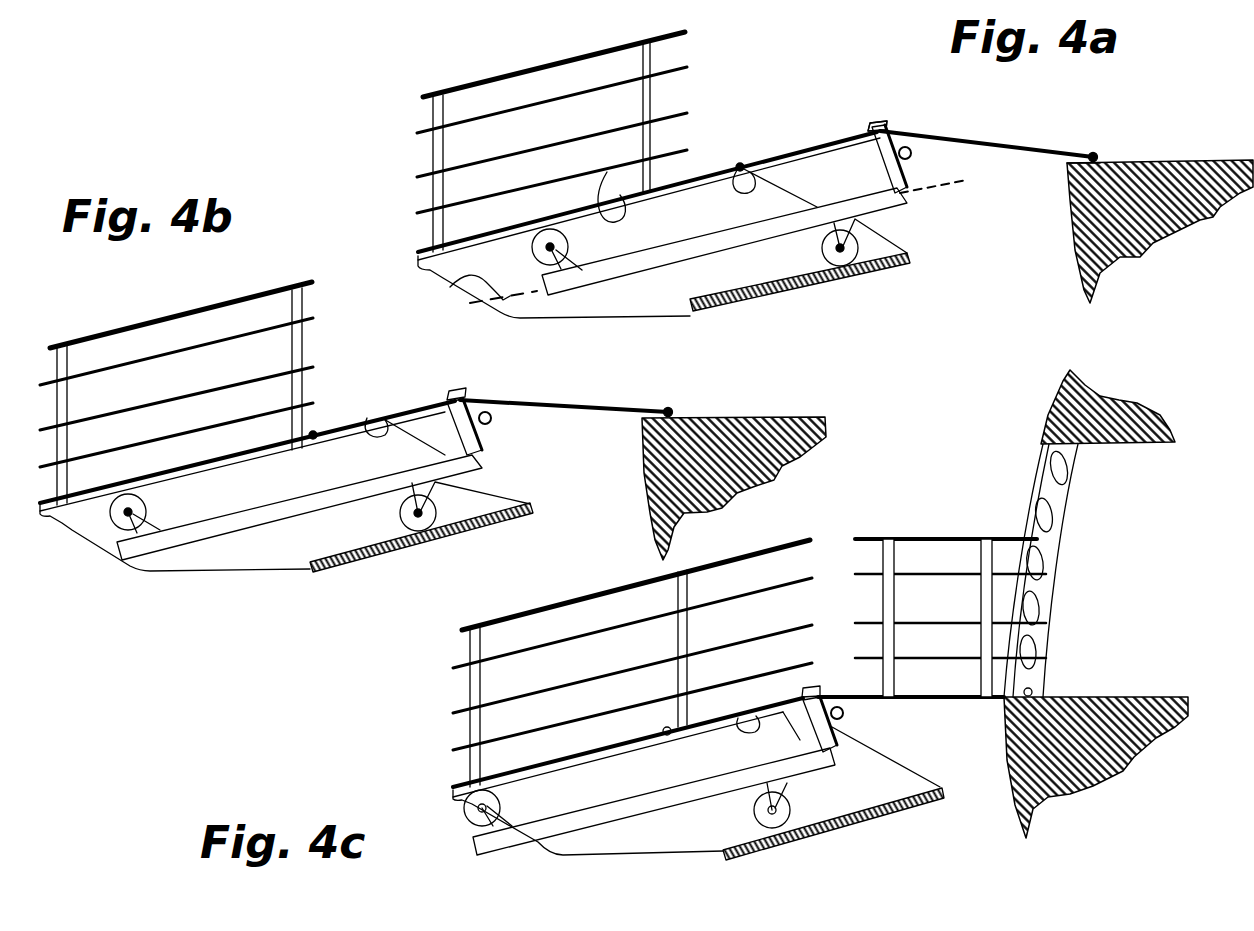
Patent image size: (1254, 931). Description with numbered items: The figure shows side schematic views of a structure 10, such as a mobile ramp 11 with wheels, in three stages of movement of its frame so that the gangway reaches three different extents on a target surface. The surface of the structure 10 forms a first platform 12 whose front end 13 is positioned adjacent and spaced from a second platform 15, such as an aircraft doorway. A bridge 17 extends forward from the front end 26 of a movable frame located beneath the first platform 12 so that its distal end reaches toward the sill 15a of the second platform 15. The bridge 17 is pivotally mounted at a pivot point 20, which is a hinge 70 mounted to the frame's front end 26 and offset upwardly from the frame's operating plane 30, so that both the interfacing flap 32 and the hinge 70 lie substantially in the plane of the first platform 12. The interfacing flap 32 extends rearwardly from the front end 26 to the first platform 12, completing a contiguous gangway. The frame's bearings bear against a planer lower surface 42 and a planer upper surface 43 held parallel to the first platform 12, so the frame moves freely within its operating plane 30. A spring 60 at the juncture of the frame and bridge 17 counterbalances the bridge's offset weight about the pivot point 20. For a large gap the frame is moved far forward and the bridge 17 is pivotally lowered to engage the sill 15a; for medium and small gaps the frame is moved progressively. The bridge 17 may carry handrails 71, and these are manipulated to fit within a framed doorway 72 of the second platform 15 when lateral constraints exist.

In FIG. 4A, the structure 10 is at (655, 311).
In FIG. 4B, the structure 10 is at (253, 553).
In FIG. 4C, the structure 10 is at (668, 833).
In FIG. 4A, the mobile ramp 11 is at (554, 287).
In FIG. 4A, the first platform 12 is at (688, 158).
In FIG. 4A, the front end 13 is at (680, 182).
In FIG. 4B, the front end 13 is at (388, 415).
In FIG. 4C, the front end 13 is at (736, 716).
In FIG. 4A, the second platform 15 is at (1233, 160).
In FIG. 4B, the second platform 15 is at (743, 417).
In FIG. 4C, the second platform 15 is at (1100, 696).
In FIG. 4A, the sill 15a is at (1067, 164).
In FIG. 4C, the sill 15a is at (1030, 690).
In FIG. 4A, the bridge 17 is at (985, 143).
In FIG. 4B, the bridge 17 is at (550, 403).
In FIG. 4C, the bridge 17 is at (921, 700).
In FIG. 4A, the pivot point 20 is at (878, 122).
In FIG. 4A, the front end 26 is at (900, 207).
In FIG. 4A, the operating plane 30 is at (452, 285).
In FIG. 4A, the interfacing flap 32 is at (783, 153).
In FIG. 4A, the planer lower surface 42 is at (797, 274).
In FIG. 4A, the planer upper surface 43 is at (618, 182).
In FIG. 4A, the spring 60 is at (913, 153).
In FIG. 4A, the hinge 70 is at (877, 126).
In FIG. 4B, the hinge 70 is at (467, 393).
In FIG. 4C, the hinge 70 is at (810, 689).
In FIG. 4C, the handrails 71 is at (912, 534).
In FIG. 4C, the framed doorway 72 is at (1068, 458).